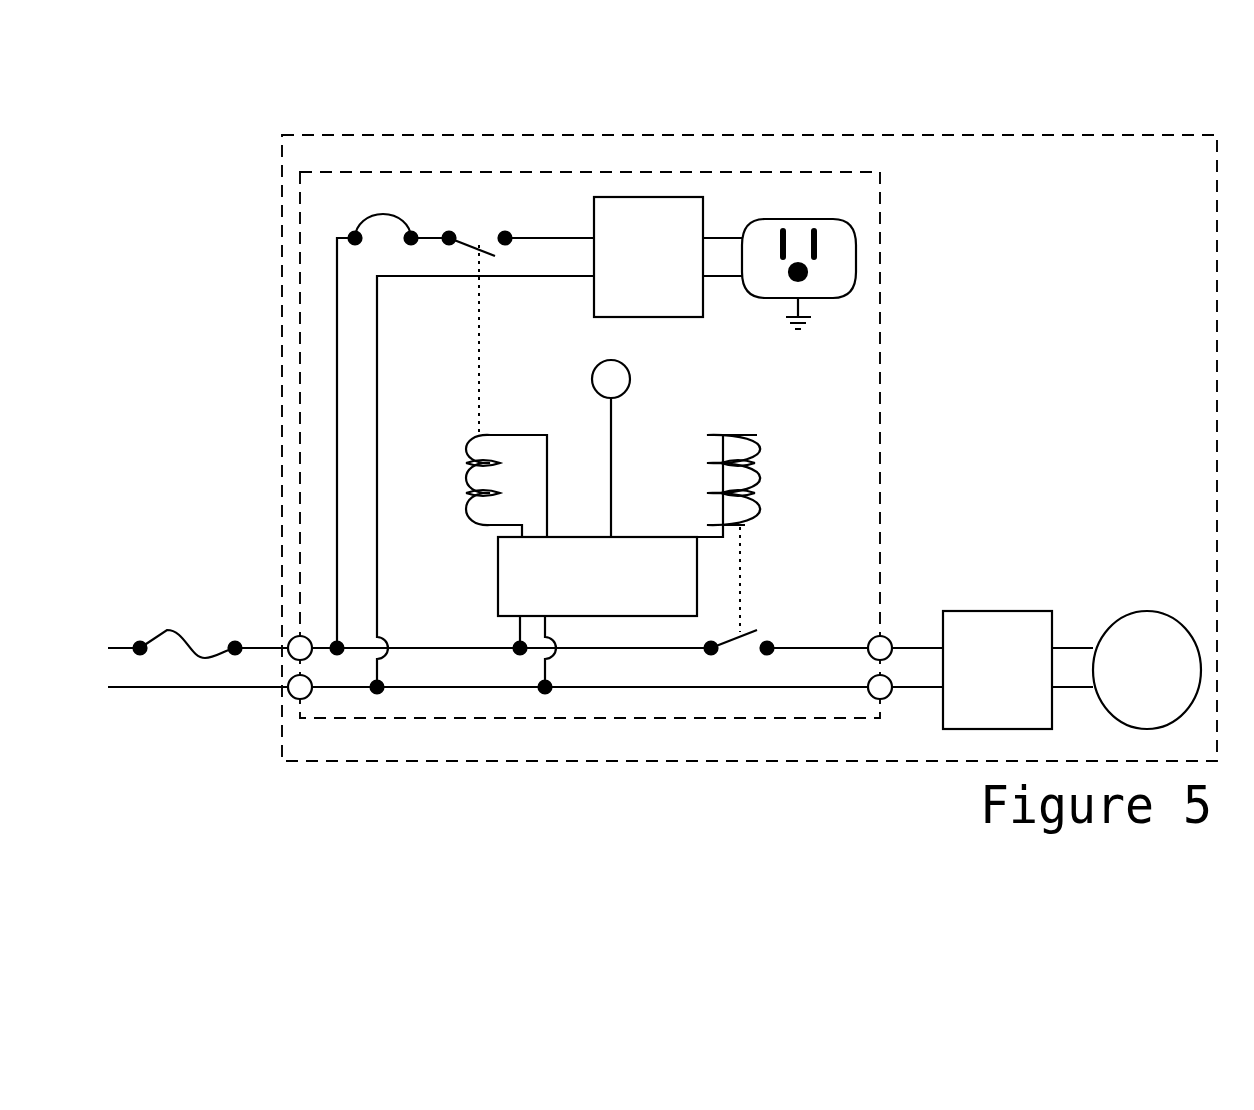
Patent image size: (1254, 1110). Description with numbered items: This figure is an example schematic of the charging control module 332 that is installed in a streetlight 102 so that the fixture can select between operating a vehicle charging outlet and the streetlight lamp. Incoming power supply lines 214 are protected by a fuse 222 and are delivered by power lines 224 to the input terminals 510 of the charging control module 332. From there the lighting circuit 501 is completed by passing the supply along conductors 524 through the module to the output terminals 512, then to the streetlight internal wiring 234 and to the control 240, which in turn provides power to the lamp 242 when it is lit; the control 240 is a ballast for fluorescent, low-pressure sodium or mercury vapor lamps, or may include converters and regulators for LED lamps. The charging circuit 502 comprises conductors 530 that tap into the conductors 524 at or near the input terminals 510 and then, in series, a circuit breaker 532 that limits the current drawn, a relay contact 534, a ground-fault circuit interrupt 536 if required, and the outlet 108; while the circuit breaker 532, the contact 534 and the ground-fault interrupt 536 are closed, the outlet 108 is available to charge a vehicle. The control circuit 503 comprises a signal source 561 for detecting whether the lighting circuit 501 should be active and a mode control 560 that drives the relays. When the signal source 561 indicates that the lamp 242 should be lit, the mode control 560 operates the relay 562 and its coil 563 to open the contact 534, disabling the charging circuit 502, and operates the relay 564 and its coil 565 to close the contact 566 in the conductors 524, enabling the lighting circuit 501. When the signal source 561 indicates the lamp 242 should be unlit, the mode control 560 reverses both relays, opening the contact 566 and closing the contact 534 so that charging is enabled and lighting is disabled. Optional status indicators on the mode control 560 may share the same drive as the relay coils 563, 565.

The streetlight 102 is at (375, 133).
The charging control module 332 is at (505, 172).
The conductors 530 is at (335, 257).
The circuit breaker 532 is at (380, 191).
The relay contact 534 is at (475, 247).
The ground-fault circuit interrupt 536 is at (594, 234).
The outlet 108 is at (780, 300).
The charging circuit 502 is at (866, 320).
The signal source 561 is at (598, 367).
The coil 563 is at (462, 509).
The relay 562 is at (473, 548).
The relay coil 565 is at (744, 435).
The relay 564 is at (737, 398).
The mode control 560 is at (566, 537).
The control circuit 503 is at (803, 468).
The lighting circuit 501 is at (1033, 527).
The conductors 524 is at (660, 648).
The contact 566 is at (754, 630).
The input terminals 510 is at (309, 657).
The output terminals 512 is at (871, 657).
The power supply lines 214 is at (123, 648).
The fuse 222 is at (165, 630).
The power lines 224 is at (256, 628).
The internal wiring 234 is at (912, 648).
The control 240 is at (1005, 611).
The lamp 242 is at (1123, 613).